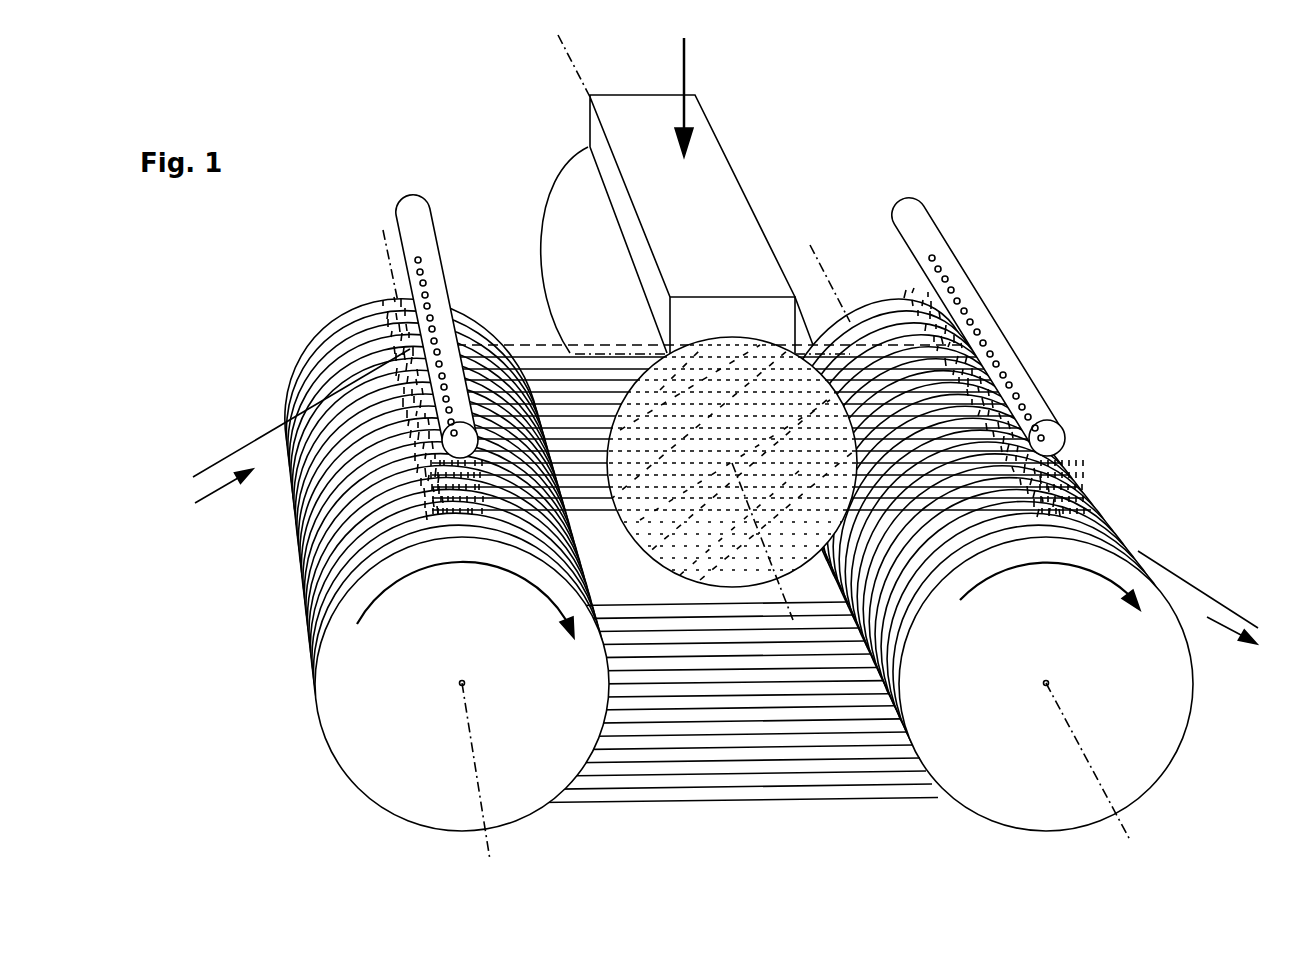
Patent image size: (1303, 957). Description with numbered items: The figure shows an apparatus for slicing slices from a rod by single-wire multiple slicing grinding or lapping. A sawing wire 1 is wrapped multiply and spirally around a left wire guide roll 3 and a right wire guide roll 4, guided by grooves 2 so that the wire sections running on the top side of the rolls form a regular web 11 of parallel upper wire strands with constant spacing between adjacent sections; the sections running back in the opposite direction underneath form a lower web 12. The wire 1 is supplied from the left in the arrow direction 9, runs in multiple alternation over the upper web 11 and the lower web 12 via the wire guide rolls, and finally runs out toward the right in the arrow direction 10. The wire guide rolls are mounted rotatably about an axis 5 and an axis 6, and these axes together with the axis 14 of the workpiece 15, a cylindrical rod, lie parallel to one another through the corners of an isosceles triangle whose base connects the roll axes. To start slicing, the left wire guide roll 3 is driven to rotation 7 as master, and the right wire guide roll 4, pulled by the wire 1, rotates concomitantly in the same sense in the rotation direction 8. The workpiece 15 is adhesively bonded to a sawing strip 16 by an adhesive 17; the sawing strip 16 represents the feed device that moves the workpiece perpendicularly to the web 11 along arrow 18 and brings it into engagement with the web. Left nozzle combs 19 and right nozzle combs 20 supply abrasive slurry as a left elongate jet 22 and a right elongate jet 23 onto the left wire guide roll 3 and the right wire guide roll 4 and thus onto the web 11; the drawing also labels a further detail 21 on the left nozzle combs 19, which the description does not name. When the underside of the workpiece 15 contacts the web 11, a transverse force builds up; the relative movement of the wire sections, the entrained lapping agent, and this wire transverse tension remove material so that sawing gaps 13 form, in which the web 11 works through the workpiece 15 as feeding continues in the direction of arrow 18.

The sawing wire 1 is at (230, 452).
The grooves 2 is at (490, 347).
The left wire guide roll 3 is at (317, 363).
The right wire guide roll 4 is at (867, 330).
The axis 5 is at (387, 270).
The axis 6 is at (812, 247).
The rotation 7 is at (463, 565).
The rotation direction 8 is at (1025, 568).
The arrow direction 9 is at (223, 481).
The arrow direction 10 is at (1220, 632).
The web 11 is at (534, 343).
The lower web 12 is at (791, 773).
The sawing gaps 13 is at (680, 566).
The axis 14 is at (558, 72).
The workpiece 15 is at (563, 187).
The sawing strip 16 is at (708, 153).
The adhesive 17 is at (750, 330).
The arrow 18 is at (688, 64).
The left nozzle combs 19 is at (413, 210).
The right nozzle combs 20 is at (933, 218).
The nozzle openings 21 is at (420, 270).
The left elongate jet 22 is at (395, 327).
The right elongate jet 23 is at (895, 298).